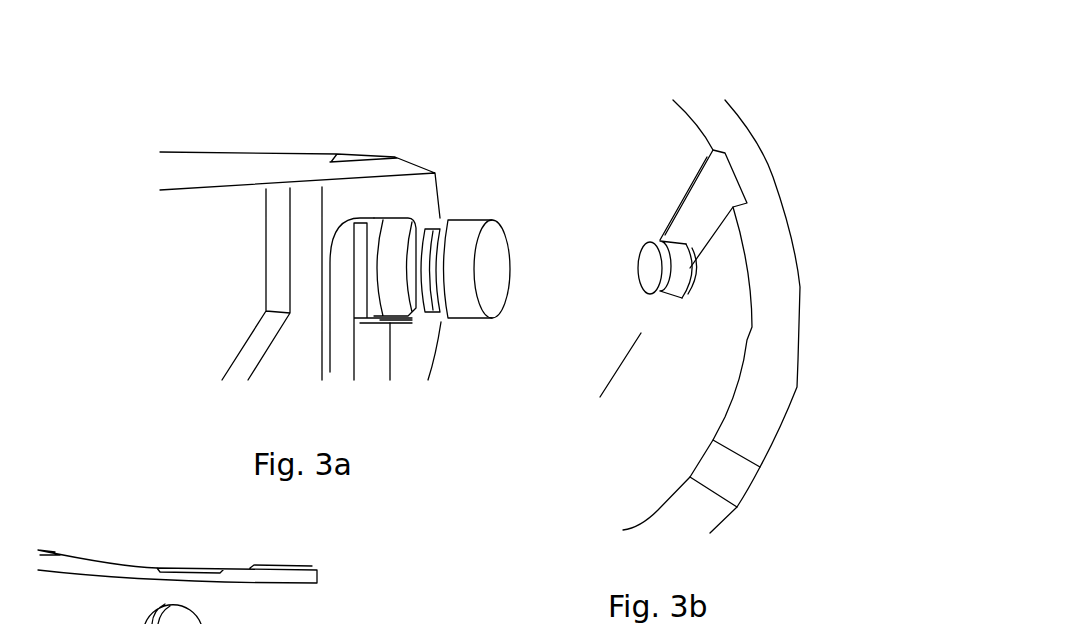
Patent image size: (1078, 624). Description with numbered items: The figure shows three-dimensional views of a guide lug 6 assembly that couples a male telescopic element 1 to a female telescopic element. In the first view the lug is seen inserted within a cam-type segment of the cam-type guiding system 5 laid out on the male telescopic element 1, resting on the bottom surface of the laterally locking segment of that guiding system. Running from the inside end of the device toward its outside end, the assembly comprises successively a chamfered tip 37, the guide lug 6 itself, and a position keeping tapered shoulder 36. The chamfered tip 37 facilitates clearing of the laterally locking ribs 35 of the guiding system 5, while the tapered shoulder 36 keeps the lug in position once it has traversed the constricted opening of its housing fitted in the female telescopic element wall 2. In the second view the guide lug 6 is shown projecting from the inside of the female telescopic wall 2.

In FIG. 3A, the male telescopic element 1 is at (157, 175).
In FIG. 3B, the female telescopic element wall 2 is at (643, 520).
In FIG. 3A, the cam-type guiding system 5 is at (333, 378).
In FIG. 3A, the guide lug 6 is at (502, 293).
In FIG. 3B, the guide lug 6 is at (643, 287).
In FIG. 3A, the laterally locking ribs 35 is at (347, 284).
In FIG. 3A, the position keeping tapered shoulder 36 is at (445, 326).
In FIG. 3B, the position keeping tapered shoulder 36 is at (690, 268).
In FIG. 3A, the chamfered tip 37 is at (383, 220).
In FIG. 3B, the chamfered tip 37 is at (643, 252).